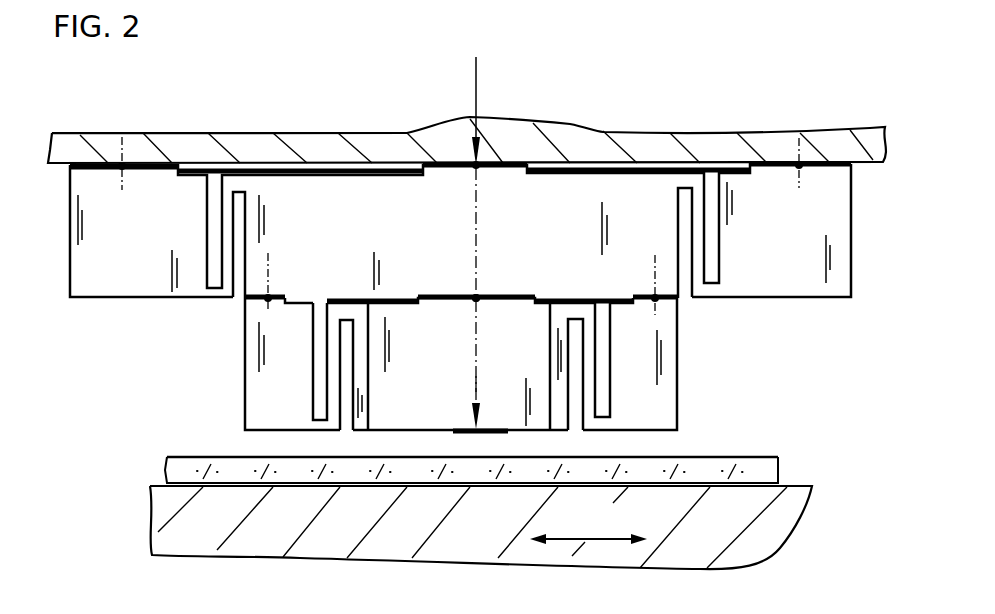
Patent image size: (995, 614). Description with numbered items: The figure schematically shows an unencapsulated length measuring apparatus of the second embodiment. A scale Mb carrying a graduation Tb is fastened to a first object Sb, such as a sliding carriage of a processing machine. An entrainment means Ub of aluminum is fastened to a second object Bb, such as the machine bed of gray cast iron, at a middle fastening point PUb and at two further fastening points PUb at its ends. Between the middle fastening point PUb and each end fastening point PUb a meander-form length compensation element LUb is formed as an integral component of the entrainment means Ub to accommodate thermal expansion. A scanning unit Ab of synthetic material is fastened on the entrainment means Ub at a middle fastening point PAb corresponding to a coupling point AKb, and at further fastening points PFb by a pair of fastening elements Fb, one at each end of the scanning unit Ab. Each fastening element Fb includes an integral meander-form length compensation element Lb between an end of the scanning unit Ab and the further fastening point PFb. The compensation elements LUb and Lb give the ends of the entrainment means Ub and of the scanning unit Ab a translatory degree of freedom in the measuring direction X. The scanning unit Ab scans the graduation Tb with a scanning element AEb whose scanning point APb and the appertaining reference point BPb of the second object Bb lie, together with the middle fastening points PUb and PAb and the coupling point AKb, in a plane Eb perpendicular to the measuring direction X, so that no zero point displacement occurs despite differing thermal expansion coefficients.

The second object Bb is at (326, 147).
The entrainment means Ub is at (843, 206).
The meander-form length compensation element LUb is at (225, 220).
The fastening point PUb is at (122, 165).
The reference point BPb is at (473, 117).
The plane Eb is at (478, 77).
The scanning unit Ab is at (522, 312).
The fastening element Fb is at (263, 365).
The meander-form length compensation element Lb is at (335, 391).
The further fastening point PFb is at (266, 302).
The coupling point AKb is at (476, 298).
The middle fastening point PAb is at (475, 300).
The scanning point APb is at (477, 387).
The scanning element AEb is at (473, 428).
The graduation Tb is at (207, 456).
The scale Mb is at (292, 473).
The first object Sb is at (392, 535).
The measuring direction X is at (588, 525).